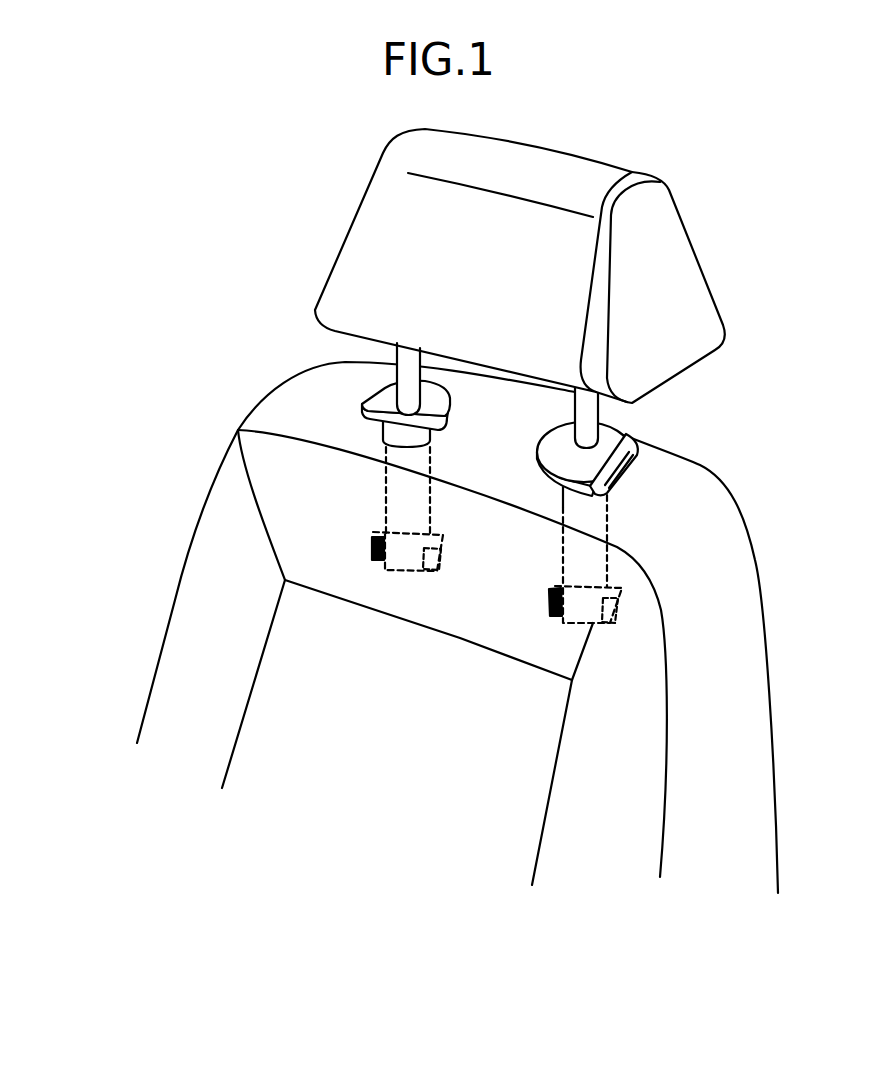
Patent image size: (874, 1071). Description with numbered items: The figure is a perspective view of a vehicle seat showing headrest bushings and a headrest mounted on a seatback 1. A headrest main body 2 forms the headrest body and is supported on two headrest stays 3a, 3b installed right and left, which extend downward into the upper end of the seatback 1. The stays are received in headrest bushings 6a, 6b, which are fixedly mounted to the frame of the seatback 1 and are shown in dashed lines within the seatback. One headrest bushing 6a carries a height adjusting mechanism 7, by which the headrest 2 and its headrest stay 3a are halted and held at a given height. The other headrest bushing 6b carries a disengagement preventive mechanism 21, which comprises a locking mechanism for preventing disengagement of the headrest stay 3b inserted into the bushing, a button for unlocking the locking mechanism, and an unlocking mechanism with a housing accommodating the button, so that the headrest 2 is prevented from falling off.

The seatback 1 is at (180, 670).
The headrest main body 2 is at (385, 238).
The headrest stay 3a is at (590, 423).
The headrest stay 3b is at (405, 376).
The headrest bushing 6a is at (617, 547).
The headrest bushing 6b is at (403, 503).
The height adjusting mechanism 7 is at (683, 456).
The disengagement preventive mechanism 21 is at (433, 392).